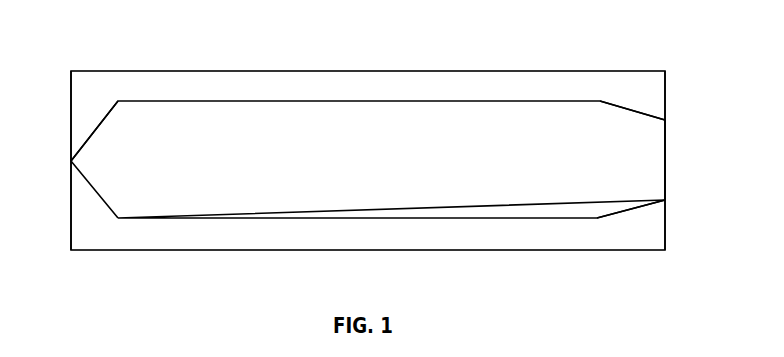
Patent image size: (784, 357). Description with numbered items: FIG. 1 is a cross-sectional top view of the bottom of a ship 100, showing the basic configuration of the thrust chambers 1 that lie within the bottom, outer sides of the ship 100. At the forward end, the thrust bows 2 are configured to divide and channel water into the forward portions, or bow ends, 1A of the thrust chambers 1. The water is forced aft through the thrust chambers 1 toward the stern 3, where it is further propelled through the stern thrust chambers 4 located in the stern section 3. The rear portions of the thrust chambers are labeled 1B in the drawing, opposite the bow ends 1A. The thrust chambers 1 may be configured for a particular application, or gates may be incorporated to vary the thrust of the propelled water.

The ship 100 is at (498, 71).
The thrust chambers 1 is at (408, 89).
The forward portions, or bow ends, of the thrust chambers 1A is at (127, 80).
The second end portion 1B is at (641, 79).
The thrust bows 2 is at (96, 164).
The stern 3 is at (644, 163).
The stern thrust chambers 4 is at (646, 93).